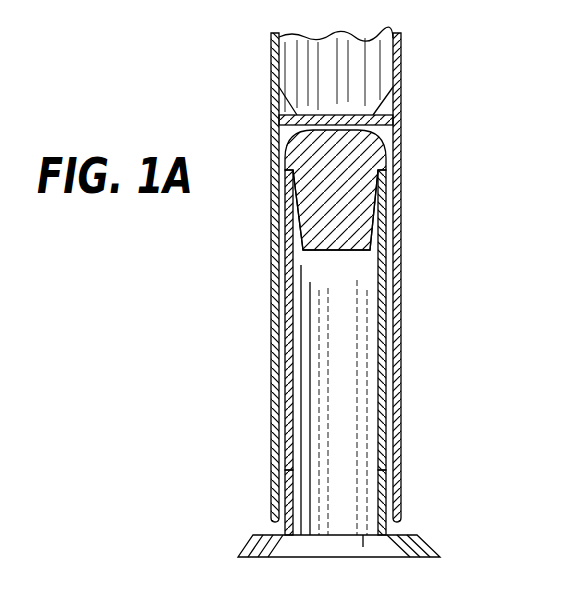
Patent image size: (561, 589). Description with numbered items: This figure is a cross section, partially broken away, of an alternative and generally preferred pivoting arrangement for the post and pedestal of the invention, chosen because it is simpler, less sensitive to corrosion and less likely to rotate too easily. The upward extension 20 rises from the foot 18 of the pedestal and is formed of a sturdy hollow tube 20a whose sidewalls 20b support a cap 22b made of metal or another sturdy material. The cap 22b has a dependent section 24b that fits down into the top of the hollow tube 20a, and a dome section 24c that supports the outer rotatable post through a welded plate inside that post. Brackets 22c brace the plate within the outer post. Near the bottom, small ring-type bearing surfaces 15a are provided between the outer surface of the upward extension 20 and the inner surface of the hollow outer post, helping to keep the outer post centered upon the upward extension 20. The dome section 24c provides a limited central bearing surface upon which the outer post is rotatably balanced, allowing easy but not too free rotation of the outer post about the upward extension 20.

The ring-type bearing surfaces 15a is at (287, 480).
The foot 18 is at (428, 548).
The upward extension 20 is at (390, 389).
The hollow tube 20a is at (305, 392).
The sidewalls 20b is at (303, 330).
The cap 22b is at (348, 200).
The brackets 22c is at (271, 103).
The dependent section 24b is at (323, 235).
The dome section 24c is at (370, 132).